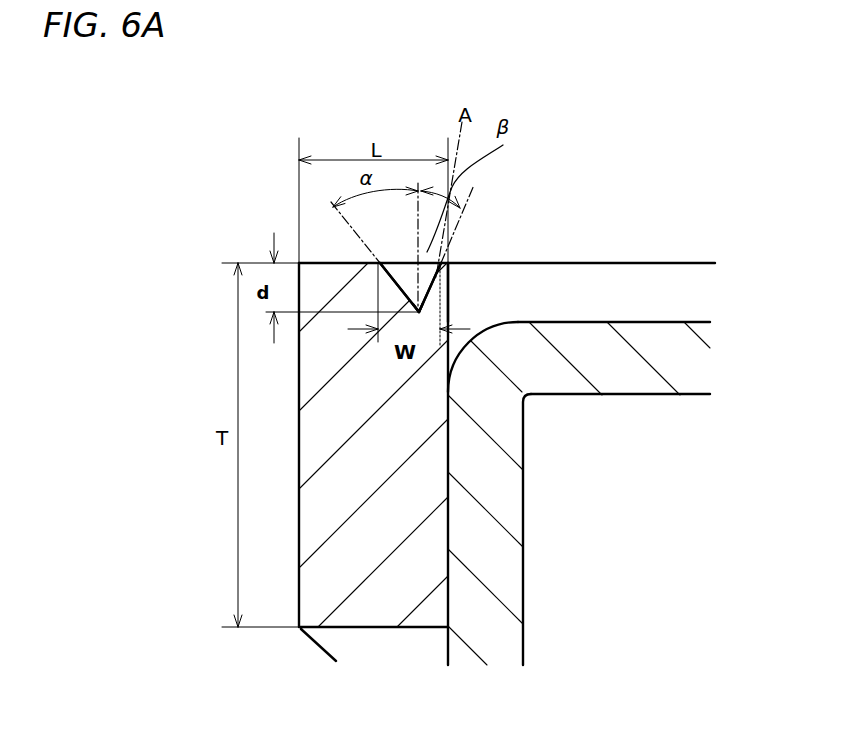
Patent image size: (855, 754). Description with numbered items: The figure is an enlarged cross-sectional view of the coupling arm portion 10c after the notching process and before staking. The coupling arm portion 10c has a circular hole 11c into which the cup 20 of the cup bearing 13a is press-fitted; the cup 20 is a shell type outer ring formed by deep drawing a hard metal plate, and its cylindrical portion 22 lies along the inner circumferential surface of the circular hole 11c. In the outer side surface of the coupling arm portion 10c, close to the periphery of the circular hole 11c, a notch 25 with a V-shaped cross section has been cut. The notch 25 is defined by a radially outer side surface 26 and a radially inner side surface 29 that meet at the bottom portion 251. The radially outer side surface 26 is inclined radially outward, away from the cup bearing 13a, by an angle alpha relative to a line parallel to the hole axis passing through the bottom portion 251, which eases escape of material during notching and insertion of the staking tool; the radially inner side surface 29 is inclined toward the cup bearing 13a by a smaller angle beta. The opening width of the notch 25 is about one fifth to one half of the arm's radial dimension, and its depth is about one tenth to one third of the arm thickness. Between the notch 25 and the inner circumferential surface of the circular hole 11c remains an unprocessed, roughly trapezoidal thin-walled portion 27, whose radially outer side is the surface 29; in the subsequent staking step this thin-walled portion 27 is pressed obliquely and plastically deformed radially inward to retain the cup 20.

The coupling arm portion 10c is at (323, 560).
The cup bearing 13a is at (652, 345).
The notch 25 is at (405, 296).
The bottom portion of the notch 251 is at (419, 313).
The radially outer side surface 26 is at (405, 294).
The thin-walled portion 27 is at (448, 287).
The radially inner side surface 29 is at (427, 266).
The circular hole 11c is at (450, 314).
The cup 20 is at (652, 380).
The cylindrical portion 22 is at (507, 508).